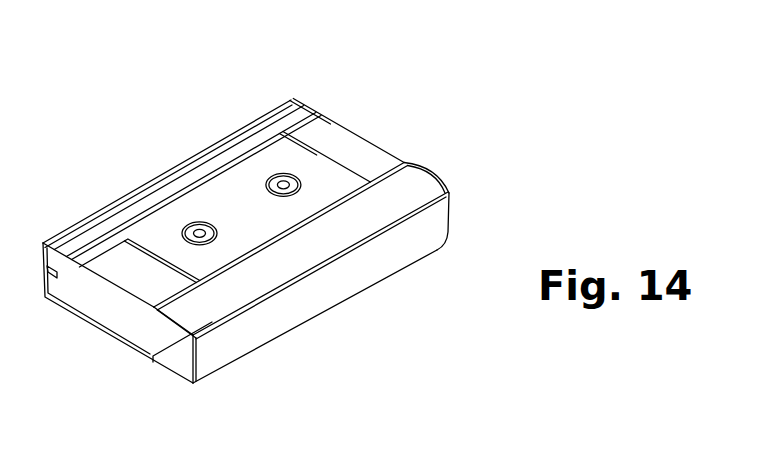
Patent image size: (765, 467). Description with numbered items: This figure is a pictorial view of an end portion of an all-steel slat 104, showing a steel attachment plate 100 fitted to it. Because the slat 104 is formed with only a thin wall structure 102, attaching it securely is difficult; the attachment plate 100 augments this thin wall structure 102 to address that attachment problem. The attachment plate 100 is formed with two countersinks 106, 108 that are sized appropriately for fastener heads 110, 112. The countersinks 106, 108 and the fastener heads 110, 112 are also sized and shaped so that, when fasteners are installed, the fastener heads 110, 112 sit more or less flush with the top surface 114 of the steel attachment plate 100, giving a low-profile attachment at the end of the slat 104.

The steel attachment plate 100 is at (336, 171).
The thin wall structure 102 is at (155, 287).
The slat 104 is at (455, 208).
The countersink 106 is at (183, 232).
The countersink 108 is at (306, 172).
The fastener head 110 is at (217, 235).
The fastener head 112 is at (295, 188).
The top surface 114 is at (233, 198).